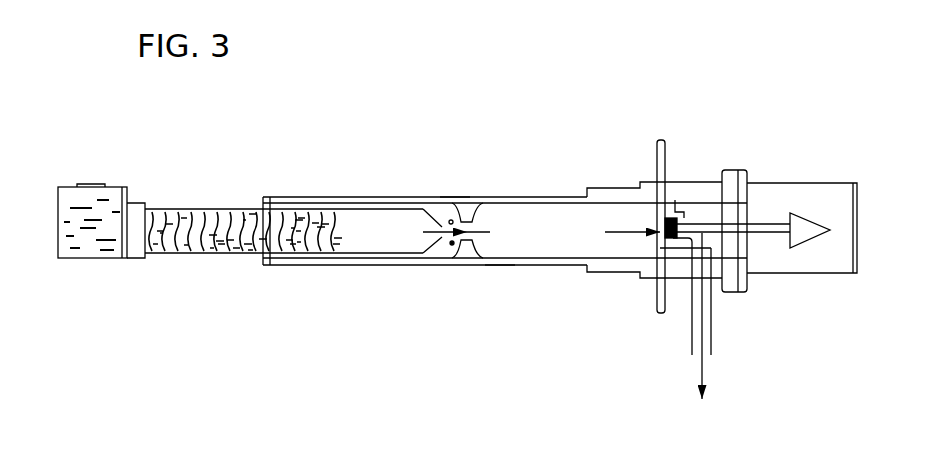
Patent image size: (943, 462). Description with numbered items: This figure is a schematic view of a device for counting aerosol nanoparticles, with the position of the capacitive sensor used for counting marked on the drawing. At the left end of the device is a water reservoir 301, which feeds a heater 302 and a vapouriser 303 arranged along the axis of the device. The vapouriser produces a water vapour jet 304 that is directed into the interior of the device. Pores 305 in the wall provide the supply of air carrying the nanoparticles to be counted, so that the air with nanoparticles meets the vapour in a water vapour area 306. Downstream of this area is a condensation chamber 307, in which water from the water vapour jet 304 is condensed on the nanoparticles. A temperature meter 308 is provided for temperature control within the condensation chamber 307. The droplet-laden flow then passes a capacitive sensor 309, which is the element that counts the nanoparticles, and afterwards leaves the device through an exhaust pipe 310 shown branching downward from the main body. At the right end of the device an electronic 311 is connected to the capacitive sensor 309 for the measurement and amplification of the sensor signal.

The water reservoir 301 is at (81, 252).
The heater 302 is at (167, 253).
The vapouriser 303 is at (255, 255).
The water vapour jet 304 is at (447, 221).
The pores 305 is at (455, 196).
The water vapour area 306 is at (417, 239).
The condensation chamber 307 is at (498, 268).
The temperature meter 308 is at (558, 210).
The capacitive sensor 309 is at (685, 216).
The exhaust pipe 310 is at (689, 348).
The electronic 311 is at (810, 212).